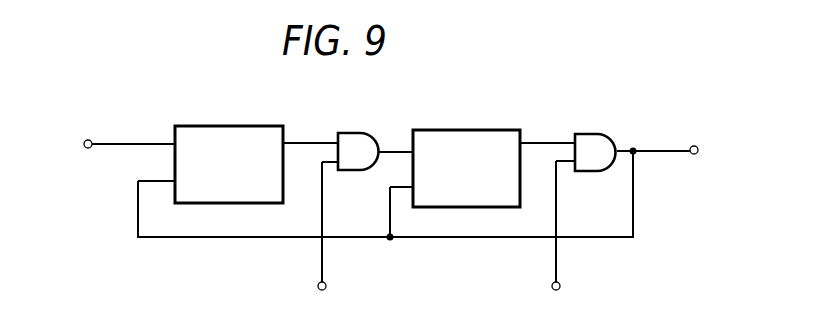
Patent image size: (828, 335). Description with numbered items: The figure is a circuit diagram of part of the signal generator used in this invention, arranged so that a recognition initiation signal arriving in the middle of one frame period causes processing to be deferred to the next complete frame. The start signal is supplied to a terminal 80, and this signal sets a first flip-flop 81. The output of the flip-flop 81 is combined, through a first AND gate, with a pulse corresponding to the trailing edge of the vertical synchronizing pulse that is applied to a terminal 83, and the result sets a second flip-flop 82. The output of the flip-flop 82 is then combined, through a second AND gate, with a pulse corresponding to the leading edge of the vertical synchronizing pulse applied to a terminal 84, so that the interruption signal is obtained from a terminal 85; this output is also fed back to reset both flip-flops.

The terminal 80 is at (84, 140).
The flip-flop 81 is at (227, 126).
The flip-flop 82 is at (486, 130).
The terminal 83 is at (326, 284).
The terminal 84 is at (560, 284).
The terminal 85 is at (697, 146).